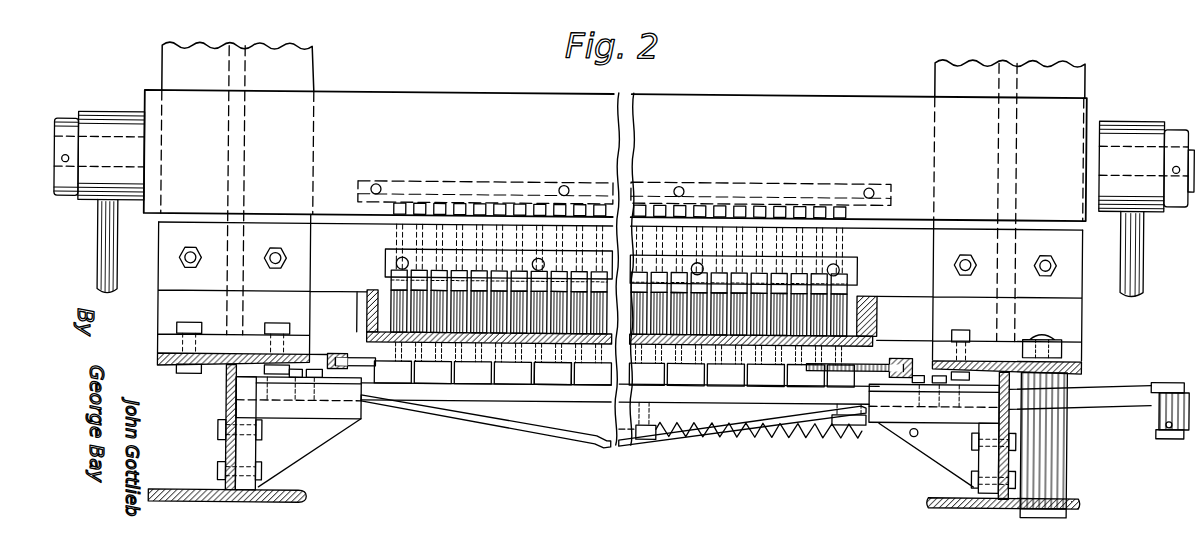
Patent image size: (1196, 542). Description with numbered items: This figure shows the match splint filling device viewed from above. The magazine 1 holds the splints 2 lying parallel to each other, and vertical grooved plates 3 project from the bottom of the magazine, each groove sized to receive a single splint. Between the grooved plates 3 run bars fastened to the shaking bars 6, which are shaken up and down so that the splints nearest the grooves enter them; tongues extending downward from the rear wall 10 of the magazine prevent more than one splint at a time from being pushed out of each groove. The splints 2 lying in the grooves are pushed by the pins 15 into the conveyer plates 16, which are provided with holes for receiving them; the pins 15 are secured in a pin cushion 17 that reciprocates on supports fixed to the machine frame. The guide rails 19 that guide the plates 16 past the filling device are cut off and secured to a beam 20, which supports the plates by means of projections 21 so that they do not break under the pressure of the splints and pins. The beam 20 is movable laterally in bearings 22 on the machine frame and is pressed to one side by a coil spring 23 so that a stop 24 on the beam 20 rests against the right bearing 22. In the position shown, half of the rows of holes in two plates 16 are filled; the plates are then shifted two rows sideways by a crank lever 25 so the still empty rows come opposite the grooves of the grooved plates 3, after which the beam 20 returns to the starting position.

The magazine 1 is at (383, 321).
The splints 2 is at (853, 352).
The grooved plates 3 is at (417, 307).
The shaking bars 6 is at (407, 277).
The rear wall 10 is at (370, 339).
The pins 15 is at (368, 301).
The conveyer plates 16 is at (372, 398).
The pin cushion 17 is at (358, 212).
The guide rails 19 is at (328, 356).
The beam 20 is at (449, 401).
The projections 21 is at (562, 386).
The bearings 22 is at (331, 413).
The coil spring 23 is at (770, 433).
The stop 24 is at (868, 426).
The crank lever 25 is at (1103, 401).